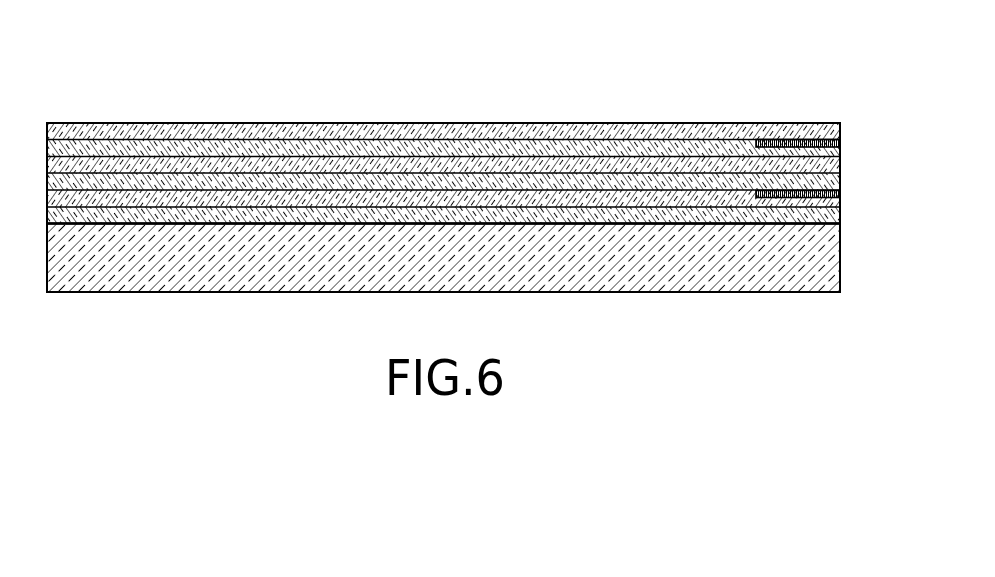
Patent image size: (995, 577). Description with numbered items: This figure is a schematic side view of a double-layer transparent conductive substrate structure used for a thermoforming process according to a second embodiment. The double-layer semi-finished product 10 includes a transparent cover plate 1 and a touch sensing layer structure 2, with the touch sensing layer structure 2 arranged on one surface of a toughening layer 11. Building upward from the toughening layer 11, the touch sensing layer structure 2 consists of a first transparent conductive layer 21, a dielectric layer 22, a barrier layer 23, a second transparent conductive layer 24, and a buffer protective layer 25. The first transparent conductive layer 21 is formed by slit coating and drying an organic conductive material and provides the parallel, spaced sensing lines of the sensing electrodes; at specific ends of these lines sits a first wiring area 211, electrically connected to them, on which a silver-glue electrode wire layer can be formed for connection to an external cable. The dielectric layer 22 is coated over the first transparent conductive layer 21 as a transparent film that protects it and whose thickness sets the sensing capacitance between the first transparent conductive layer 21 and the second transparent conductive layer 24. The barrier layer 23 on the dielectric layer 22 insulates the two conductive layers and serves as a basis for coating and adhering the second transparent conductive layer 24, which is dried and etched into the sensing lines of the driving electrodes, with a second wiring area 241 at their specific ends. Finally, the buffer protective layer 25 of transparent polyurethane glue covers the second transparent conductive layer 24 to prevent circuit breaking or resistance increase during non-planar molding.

The double-layer semi-finished product 10 is at (457, 24).
The transparent cover plate 1 is at (713, 275).
The toughening layer 11 is at (838, 218).
The touch sensing layer structure 2 is at (42, 123).
The first transparent conductive layer 21 is at (838, 208).
The first wiring area 211 is at (840, 193).
The dielectric layer 22 is at (835, 183).
The barrier layer 23 is at (835, 163).
The second transparent conductive layer 24 is at (722, 148).
The second wiring area 241 is at (802, 143).
The buffer protective layer 25 is at (657, 128).